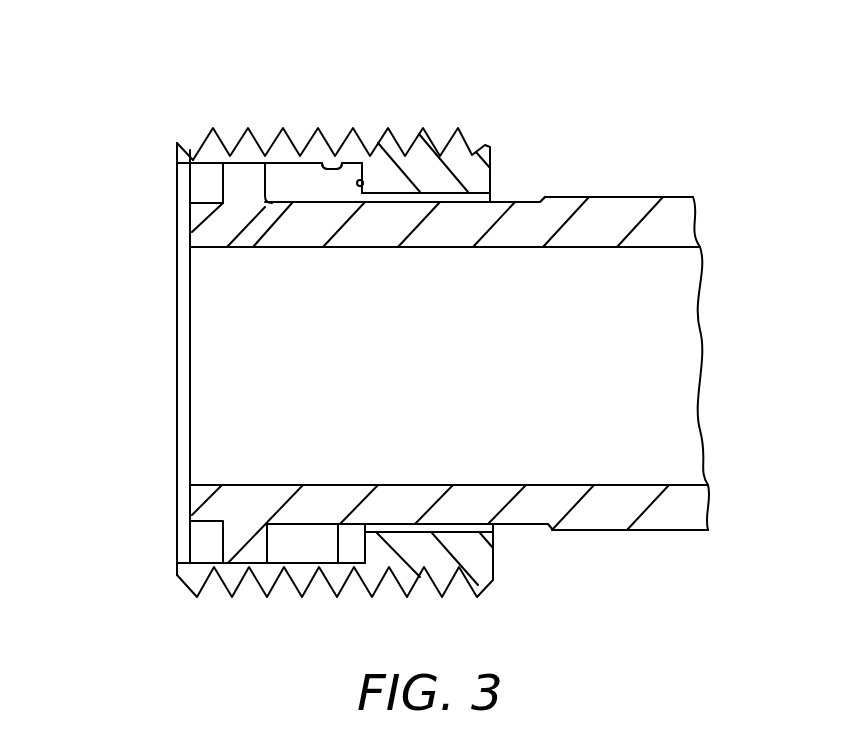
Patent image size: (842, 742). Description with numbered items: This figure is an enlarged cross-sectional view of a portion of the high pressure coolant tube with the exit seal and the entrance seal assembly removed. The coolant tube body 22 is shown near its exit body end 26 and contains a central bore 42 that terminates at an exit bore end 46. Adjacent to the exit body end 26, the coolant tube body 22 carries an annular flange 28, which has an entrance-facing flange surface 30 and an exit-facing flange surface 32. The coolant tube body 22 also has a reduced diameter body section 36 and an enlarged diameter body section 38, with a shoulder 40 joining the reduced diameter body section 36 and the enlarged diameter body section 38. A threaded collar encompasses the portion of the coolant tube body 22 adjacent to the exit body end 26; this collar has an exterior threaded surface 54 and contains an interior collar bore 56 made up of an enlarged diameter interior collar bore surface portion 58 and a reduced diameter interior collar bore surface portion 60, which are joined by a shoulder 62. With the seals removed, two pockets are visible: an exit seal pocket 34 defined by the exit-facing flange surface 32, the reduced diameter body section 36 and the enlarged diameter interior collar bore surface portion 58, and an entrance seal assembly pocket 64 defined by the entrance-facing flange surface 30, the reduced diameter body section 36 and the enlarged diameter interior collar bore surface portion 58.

The coolant tube body 22 is at (665, 526).
The exit body end 26 is at (183, 487).
The annular flange 28 is at (235, 168).
The entrance-facing flange surface 30 is at (267, 192).
The exit-facing flange surface 32 is at (220, 174).
The exit seal pocket 34 is at (200, 196).
The reduced diameter body section 36 is at (505, 200).
The enlarged diameter body section 38 is at (620, 197).
The shoulder 40 is at (538, 197).
The central bore 42 is at (222, 404).
The exit bore end 46 is at (177, 348).
The exterior threaded surface 54 is at (430, 582).
The interior collar bore 56 is at (492, 525).
The enlarged diameter interior collar bore surface portion 58 is at (335, 165).
The reduced diameter interior collar bore surface portion 60 is at (443, 193).
The shoulder 62 is at (363, 182).
The entrance seal assembly pocket 64 is at (262, 212).